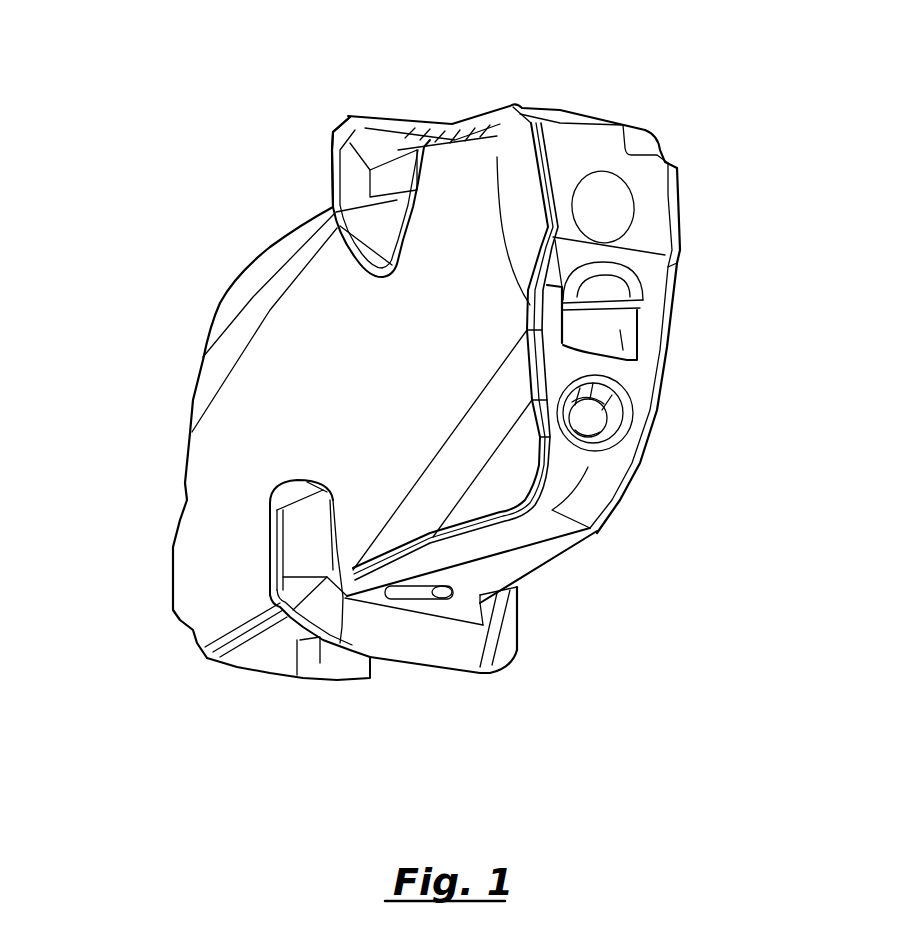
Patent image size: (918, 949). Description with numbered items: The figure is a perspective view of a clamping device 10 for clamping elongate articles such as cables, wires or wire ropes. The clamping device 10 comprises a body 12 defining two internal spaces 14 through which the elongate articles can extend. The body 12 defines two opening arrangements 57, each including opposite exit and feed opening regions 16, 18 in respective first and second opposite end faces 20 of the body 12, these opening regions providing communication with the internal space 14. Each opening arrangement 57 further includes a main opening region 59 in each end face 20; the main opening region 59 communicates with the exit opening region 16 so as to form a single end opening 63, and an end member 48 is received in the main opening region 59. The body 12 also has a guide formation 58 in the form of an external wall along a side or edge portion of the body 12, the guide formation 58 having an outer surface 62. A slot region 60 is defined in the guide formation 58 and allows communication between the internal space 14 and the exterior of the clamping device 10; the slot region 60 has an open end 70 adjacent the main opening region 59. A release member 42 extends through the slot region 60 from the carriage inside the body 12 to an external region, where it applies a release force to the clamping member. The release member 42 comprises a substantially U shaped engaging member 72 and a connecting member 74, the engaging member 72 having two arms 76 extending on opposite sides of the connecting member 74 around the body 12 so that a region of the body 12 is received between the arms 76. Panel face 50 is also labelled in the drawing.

The clamping device 10 is at (158, 235).
The body 12 is at (590, 530).
The internal space 14 is at (623, 347).
The exit opening region 16 is at (597, 305).
The feed opening region 18 is at (623, 430).
The end face 20 is at (510, 105).
The release member 42 is at (340, 110).
The end member 48 is at (645, 173).
The panel face 50 is at (647, 212).
The opening arrangement 57 is at (664, 191).
The guide formation 58 is at (530, 560).
The main opening region 59 is at (668, 277).
The slot region 60 is at (318, 657).
The outer surface 62 is at (220, 660).
The single end opening 63 is at (605, 368).
The open end 70 is at (297, 645).
The U shaped engaging member 72 is at (403, 645).
The connecting member 74 is at (420, 600).
The arm 76 is at (367, 233).